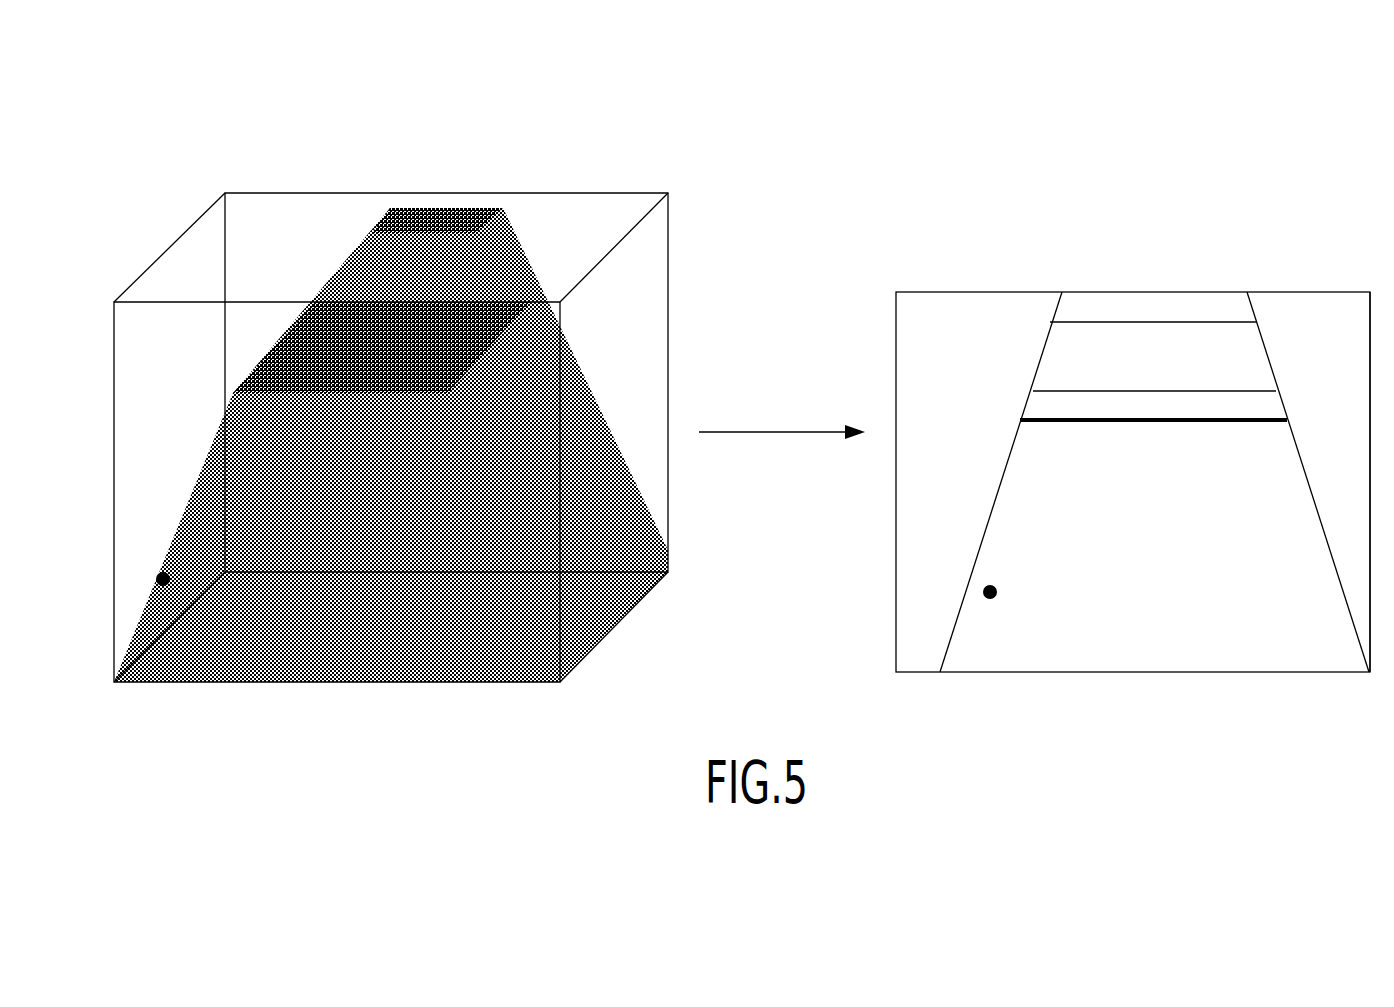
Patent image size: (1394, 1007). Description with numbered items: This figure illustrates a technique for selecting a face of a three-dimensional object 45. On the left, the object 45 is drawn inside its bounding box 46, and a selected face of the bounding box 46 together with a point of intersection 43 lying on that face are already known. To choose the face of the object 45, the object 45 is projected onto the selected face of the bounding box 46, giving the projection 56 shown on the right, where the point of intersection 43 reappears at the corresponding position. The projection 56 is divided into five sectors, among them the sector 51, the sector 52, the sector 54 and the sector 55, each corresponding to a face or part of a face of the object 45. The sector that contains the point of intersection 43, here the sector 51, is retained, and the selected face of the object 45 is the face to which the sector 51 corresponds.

The point of intersection 43 is at (167, 590).
The object 45 is at (502, 249).
The bounding box 46 is at (252, 191).
The sector 51 is at (1287, 593).
The sector 52 is at (1068, 408).
The sector 54 is at (1198, 352).
The sector 55 is at (1319, 337).
The projection 56 is at (925, 292).